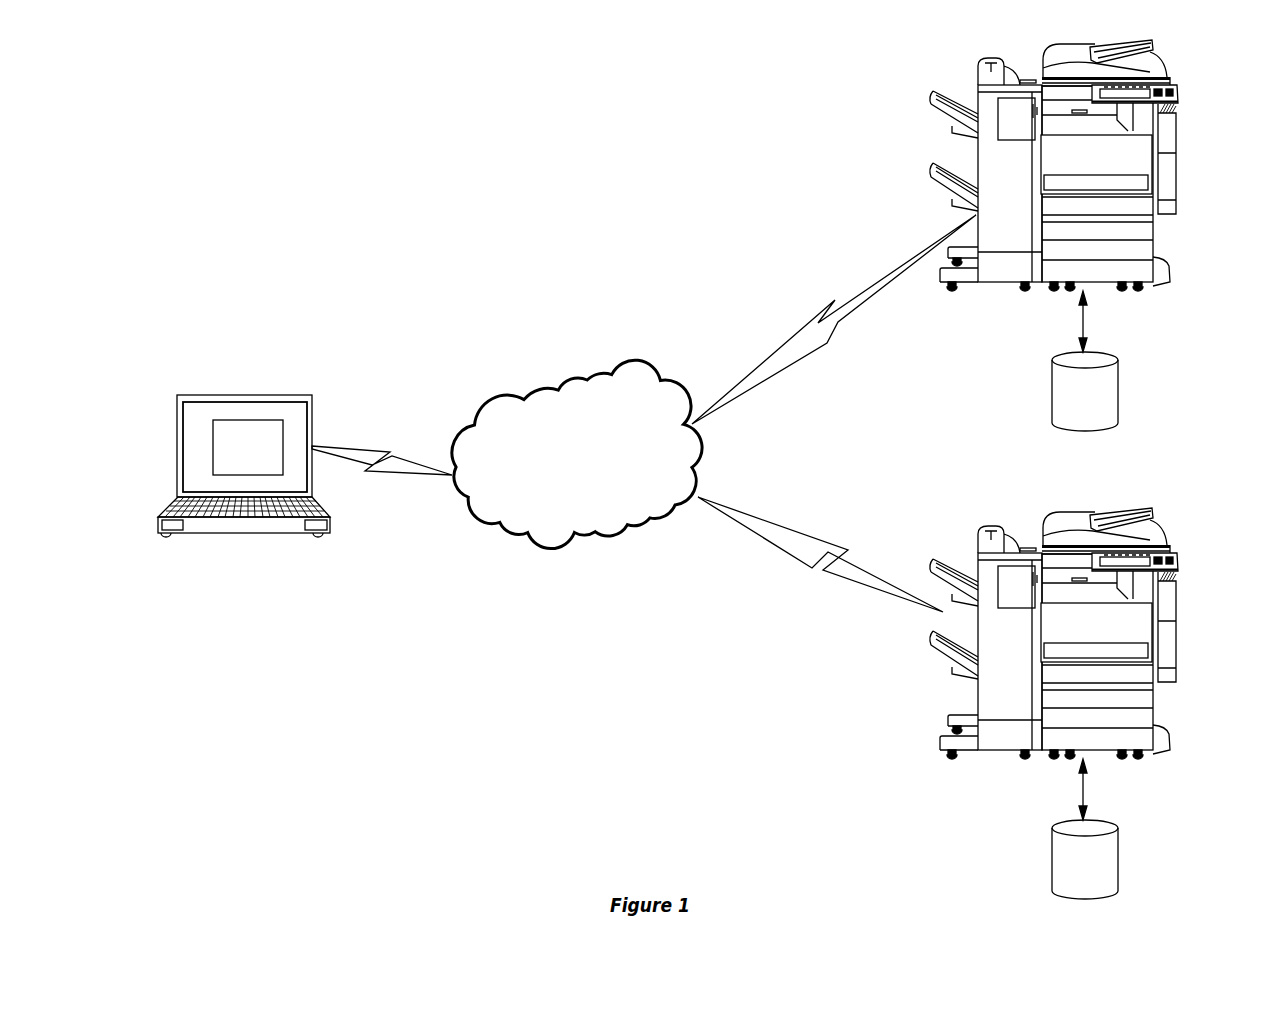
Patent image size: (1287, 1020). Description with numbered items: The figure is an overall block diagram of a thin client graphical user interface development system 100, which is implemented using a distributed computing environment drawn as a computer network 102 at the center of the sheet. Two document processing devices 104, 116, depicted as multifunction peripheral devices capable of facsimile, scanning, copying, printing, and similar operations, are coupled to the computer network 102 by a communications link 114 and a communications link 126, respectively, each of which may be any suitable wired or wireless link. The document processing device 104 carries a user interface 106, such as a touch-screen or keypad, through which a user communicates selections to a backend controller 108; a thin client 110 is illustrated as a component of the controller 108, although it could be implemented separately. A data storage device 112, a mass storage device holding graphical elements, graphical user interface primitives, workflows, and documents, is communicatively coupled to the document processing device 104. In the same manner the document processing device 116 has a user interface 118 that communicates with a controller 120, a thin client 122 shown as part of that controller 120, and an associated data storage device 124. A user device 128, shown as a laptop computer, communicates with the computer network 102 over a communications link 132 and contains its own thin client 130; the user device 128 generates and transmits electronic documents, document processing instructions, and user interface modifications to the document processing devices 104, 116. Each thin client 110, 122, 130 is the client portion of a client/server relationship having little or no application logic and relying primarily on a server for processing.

The thin client graphical user interface development system 100 is at (222, 148).
The computer network 102 is at (632, 362).
The document processing device 104 is at (1087, 154).
The user interface 106 is at (1178, 90).
The controller 108 is at (1142, 154).
The thin client 110 is at (1149, 183).
The data storage device 112 is at (1105, 353).
The communications link 114 is at (823, 313).
The document processing device 116 is at (1087, 622).
The user interface 118 is at (1165, 554).
The controller 120 is at (1142, 643).
The thin client 122 is at (1144, 663).
The data storage device 124 is at (1110, 829).
The communications link 126 is at (821, 571).
The user device 128 is at (220, 451).
The thin client 130 is at (213, 445).
The communications link 132 is at (356, 447).